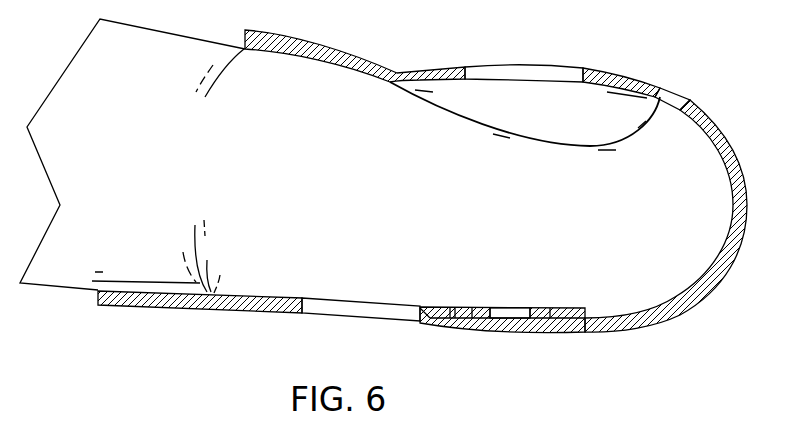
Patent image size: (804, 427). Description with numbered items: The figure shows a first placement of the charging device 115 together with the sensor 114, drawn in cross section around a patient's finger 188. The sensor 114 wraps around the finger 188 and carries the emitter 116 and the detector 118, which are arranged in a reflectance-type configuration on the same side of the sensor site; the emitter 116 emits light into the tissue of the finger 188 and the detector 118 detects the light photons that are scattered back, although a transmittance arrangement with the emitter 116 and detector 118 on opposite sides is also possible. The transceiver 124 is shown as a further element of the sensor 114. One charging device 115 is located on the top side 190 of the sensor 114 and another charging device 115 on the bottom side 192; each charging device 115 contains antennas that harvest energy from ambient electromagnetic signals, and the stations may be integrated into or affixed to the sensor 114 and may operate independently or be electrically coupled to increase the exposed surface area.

The sensor 114 is at (745, 172).
The charging device 115 is at (543, 66).
The emitter 116 is at (478, 318).
The detector 118 is at (565, 328).
The transceiver 124 is at (672, 96).
The finger 188 is at (392, 212).
The top side 190 is at (612, 73).
The bottom side 192 is at (208, 310).